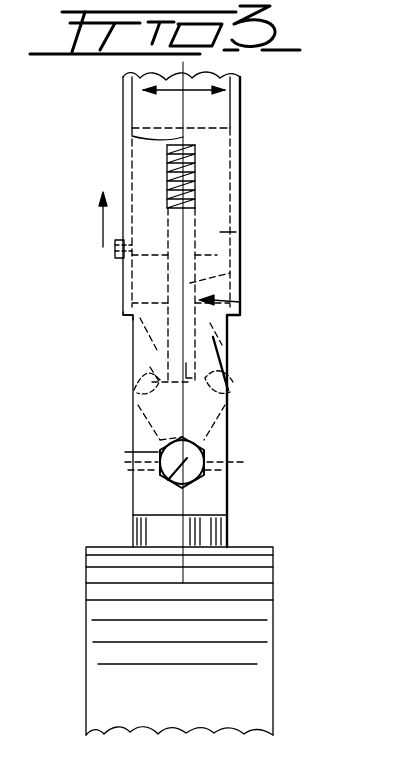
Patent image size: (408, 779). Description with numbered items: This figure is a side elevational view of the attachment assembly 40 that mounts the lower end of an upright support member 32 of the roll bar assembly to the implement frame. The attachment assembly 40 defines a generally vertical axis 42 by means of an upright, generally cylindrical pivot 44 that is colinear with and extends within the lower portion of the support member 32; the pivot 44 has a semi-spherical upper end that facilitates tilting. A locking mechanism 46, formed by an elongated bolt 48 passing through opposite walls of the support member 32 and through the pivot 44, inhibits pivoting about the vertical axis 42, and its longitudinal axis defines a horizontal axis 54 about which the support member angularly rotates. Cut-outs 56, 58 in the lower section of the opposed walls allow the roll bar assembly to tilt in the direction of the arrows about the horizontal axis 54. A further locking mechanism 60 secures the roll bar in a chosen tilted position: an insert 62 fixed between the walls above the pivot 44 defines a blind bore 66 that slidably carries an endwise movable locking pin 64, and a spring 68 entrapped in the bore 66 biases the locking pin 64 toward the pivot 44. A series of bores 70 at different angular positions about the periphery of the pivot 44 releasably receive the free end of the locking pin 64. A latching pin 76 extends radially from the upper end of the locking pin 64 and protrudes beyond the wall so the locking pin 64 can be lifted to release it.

The upright support member 32 is at (217, 100).
The attachment assembly 40 is at (122, 529).
The vertical axis 42 is at (132, 136).
The pivot 44 is at (230, 528).
The locking mechanism 46 is at (157, 463).
The bolt 48 is at (193, 455).
The horizontal axis 54 is at (137, 482).
The cut-out 56 is at (132, 317).
The cut-out 58 is at (233, 323).
The locking mechanism 60 is at (240, 302).
The insert 62 is at (230, 232).
The locking pin 64 is at (230, 273).
The blind bore 66 is at (197, 155).
The spring 68 is at (195, 177).
The bores 70 is at (130, 383).
The latching pin 76 is at (115, 267).